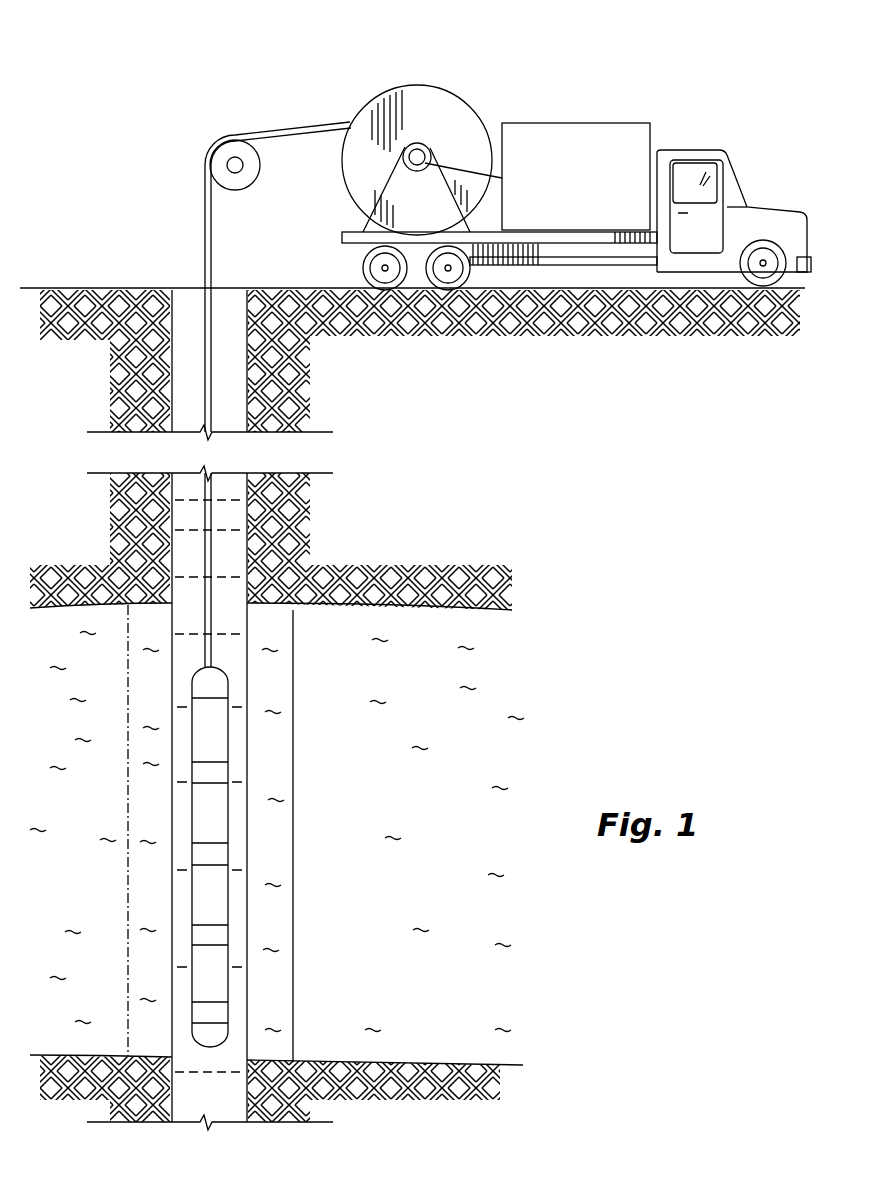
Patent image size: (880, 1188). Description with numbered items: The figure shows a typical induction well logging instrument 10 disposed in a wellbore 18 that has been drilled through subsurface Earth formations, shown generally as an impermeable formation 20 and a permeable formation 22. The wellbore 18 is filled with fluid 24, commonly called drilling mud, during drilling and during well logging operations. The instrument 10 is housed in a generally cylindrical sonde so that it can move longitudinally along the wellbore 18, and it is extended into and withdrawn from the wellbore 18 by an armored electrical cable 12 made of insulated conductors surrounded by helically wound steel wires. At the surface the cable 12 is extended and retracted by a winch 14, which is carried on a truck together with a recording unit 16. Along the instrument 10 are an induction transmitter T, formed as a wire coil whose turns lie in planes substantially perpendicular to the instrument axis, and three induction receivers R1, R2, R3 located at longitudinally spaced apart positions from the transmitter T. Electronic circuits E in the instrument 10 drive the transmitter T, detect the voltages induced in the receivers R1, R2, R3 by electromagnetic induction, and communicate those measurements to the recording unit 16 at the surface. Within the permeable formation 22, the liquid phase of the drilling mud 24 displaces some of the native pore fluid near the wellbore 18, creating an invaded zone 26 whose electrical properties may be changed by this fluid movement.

The well logging instrument 10 is at (186, 894).
The armored electrical cable 12 is at (213, 557).
The winch 14 is at (423, 90).
The recording unit 16 is at (578, 121).
The wellbore 18 is at (183, 562).
The impermeable formation 20 is at (450, 467).
The permeable formation 22 is at (452, 835).
The fluid 24 is at (182, 297).
The invaded zone 26 is at (142, 799).
The electronic circuits E is at (213, 688).
The induction transmitter T is at (213, 772).
The induction receiver R1 is at (215, 852).
The induction receiver R2 is at (215, 933).
The induction receiver R3 is at (215, 1010).